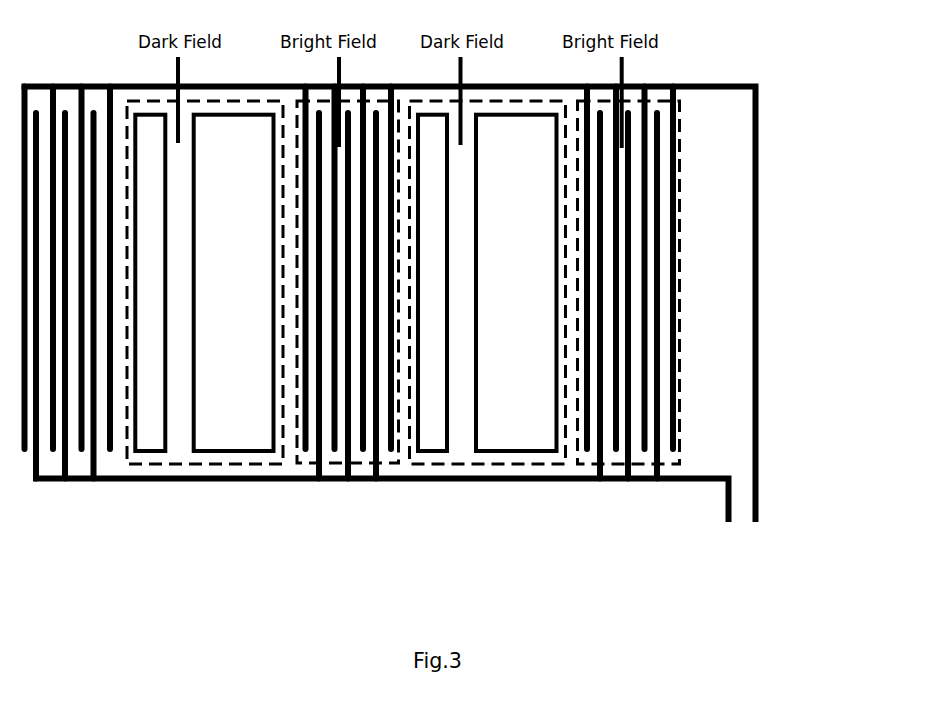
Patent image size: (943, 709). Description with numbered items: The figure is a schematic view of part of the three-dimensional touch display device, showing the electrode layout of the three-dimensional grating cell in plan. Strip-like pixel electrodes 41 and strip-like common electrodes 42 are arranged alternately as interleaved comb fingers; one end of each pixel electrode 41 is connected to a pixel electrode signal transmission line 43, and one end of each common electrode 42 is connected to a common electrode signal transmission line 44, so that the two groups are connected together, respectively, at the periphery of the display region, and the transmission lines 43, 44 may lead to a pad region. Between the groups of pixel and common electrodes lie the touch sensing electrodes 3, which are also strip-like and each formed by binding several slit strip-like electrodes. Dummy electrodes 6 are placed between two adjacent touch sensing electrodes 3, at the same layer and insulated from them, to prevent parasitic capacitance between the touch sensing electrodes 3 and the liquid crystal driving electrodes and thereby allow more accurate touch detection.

The touch sensing electrode 3 is at (262, 437).
The dummy electrode 6 is at (149, 437).
The pixel electrode 41 is at (673, 425).
The common electrode 42 is at (660, 460).
The pixel electrode signal transmission line 43 is at (756, 508).
The common electrode signal transmission line 44 is at (728, 508).